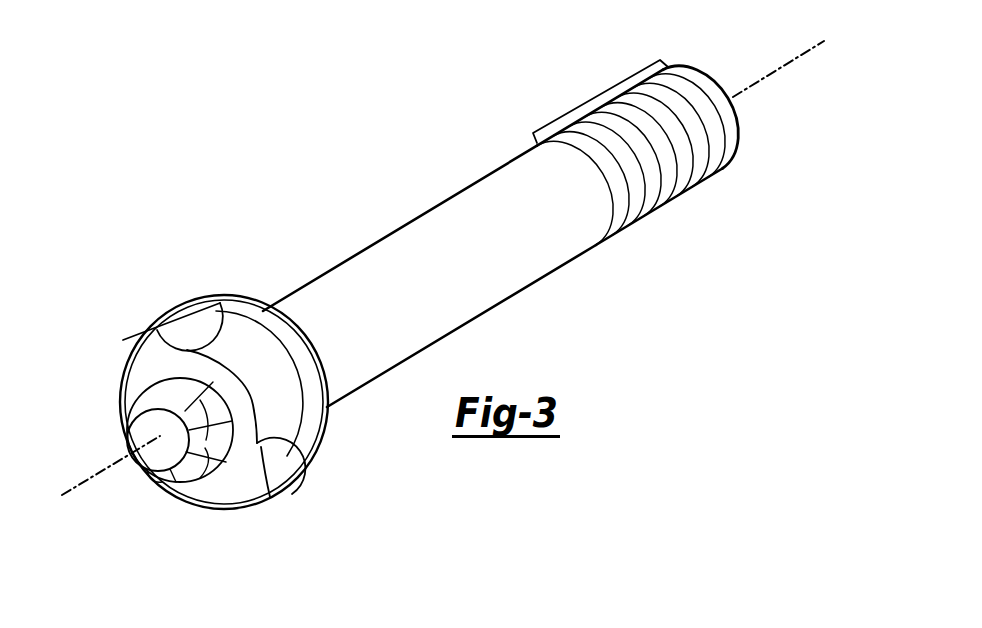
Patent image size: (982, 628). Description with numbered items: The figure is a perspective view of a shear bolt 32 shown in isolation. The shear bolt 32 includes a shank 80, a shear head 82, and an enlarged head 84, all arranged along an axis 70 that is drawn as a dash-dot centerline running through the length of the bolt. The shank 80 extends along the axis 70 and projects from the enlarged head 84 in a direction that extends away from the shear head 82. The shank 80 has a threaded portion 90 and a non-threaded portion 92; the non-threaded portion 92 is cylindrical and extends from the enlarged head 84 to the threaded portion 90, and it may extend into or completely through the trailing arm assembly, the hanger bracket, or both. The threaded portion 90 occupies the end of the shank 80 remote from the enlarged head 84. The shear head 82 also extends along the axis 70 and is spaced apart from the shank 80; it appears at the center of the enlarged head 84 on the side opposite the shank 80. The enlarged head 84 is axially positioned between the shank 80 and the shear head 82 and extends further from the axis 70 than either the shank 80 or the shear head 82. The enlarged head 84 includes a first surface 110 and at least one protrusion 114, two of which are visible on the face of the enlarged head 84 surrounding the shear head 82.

The fastener 32 is at (257, 212).
The longitudinal axis 70 is at (789, 61).
The shaft 80 is at (535, 282).
The central post 82 is at (120, 445).
The head 84 is at (188, 295).
The threaded portion 90 is at (600, 97).
The shank 92 is at (403, 227).
The drive surface 110 is at (138, 363).
The recesses 114 is at (123, 340).